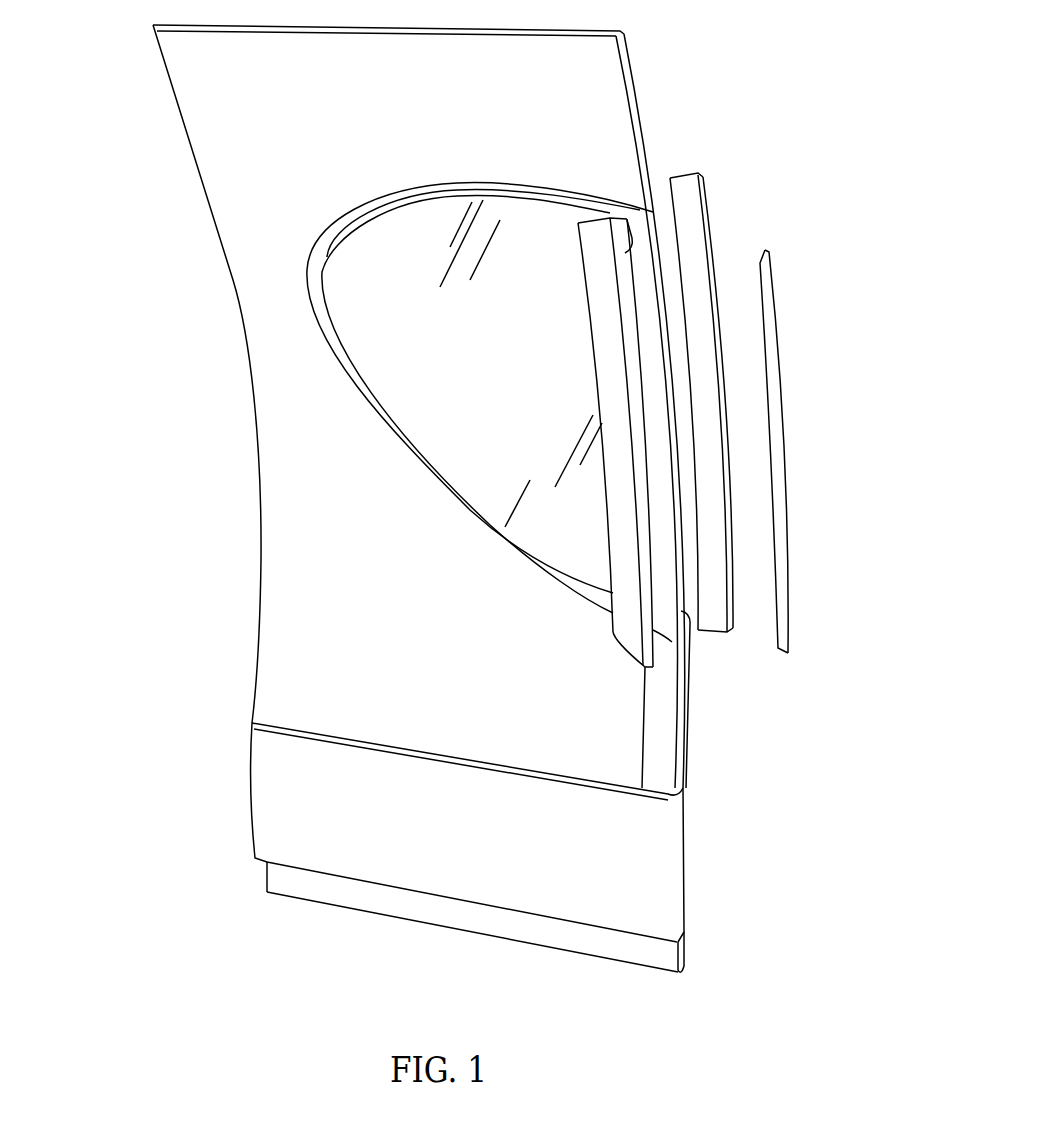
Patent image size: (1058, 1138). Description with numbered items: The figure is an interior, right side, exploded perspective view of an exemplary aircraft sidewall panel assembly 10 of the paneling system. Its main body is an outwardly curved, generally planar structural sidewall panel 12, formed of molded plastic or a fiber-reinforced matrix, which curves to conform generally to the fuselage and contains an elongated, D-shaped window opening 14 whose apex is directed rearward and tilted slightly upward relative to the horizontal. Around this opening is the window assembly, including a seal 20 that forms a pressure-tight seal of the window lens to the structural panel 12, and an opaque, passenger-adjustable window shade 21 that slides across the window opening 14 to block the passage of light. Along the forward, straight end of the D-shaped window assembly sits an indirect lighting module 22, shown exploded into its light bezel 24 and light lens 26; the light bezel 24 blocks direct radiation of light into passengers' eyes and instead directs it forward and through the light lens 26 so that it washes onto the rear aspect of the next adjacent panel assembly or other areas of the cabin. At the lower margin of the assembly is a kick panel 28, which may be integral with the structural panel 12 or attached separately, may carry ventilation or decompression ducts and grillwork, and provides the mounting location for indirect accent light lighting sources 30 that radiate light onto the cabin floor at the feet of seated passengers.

The aircraft sidewall panel assembly 10 is at (843, 332).
The structural sidewall panel 12 is at (333, 102).
The window opening 14 is at (510, 407).
The seal 20 is at (322, 308).
The window shade 21 is at (408, 380).
The lighting module 22 is at (717, 225).
The light bezel 24 is at (630, 593).
The light lens 26 is at (793, 490).
The kick panel 28 is at (285, 807).
The indirect accent light lighting sources 30 is at (323, 888).